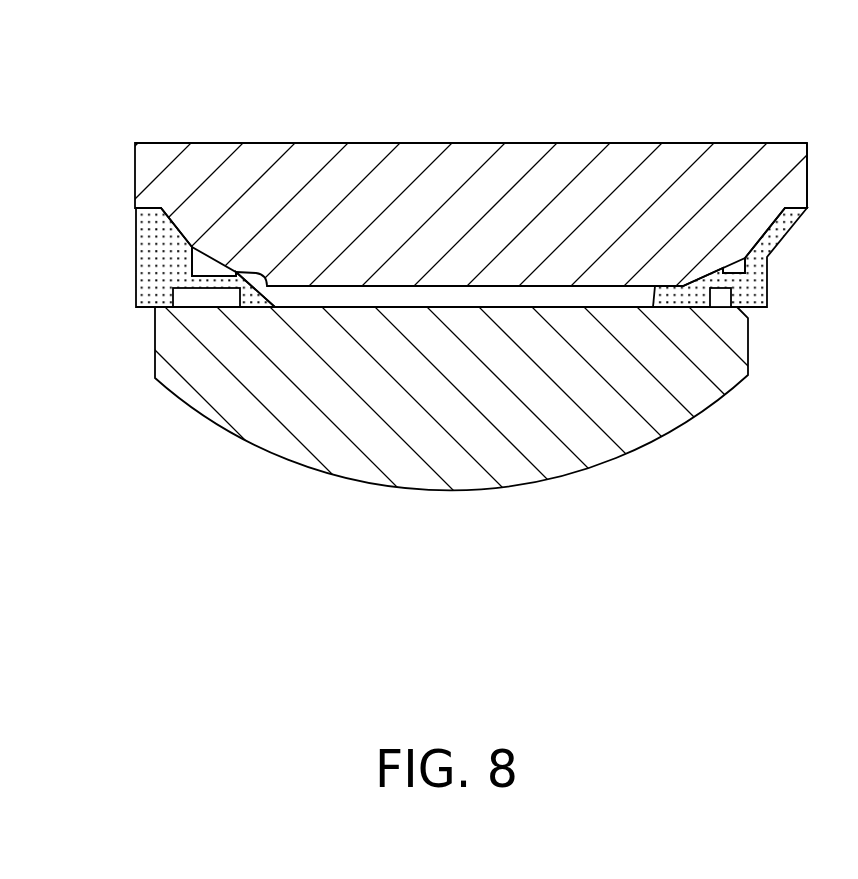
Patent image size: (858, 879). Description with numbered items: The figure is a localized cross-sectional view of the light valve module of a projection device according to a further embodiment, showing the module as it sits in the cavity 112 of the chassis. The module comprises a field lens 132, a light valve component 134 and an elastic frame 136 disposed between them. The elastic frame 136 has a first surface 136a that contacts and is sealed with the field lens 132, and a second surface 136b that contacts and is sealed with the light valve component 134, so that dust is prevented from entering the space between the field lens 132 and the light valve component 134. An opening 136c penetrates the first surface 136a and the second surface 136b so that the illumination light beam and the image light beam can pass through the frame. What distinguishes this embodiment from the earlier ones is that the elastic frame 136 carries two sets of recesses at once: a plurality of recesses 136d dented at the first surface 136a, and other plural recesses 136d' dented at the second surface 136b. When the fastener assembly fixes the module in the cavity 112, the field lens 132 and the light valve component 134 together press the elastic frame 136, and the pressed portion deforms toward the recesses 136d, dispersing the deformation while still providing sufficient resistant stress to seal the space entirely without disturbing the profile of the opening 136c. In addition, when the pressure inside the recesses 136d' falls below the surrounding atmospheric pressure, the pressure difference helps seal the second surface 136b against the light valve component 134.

The cavity 112 is at (794, 196).
The field lens 132 is at (362, 425).
The light valve component 134 is at (488, 192).
The elastic frame 136 is at (668, 286).
The first surface 136a is at (150, 310).
The second surface 136b is at (150, 205).
The opening 136c is at (289, 303).
The recesses 136d is at (452, 458).
The recesses 136d' is at (468, 156).